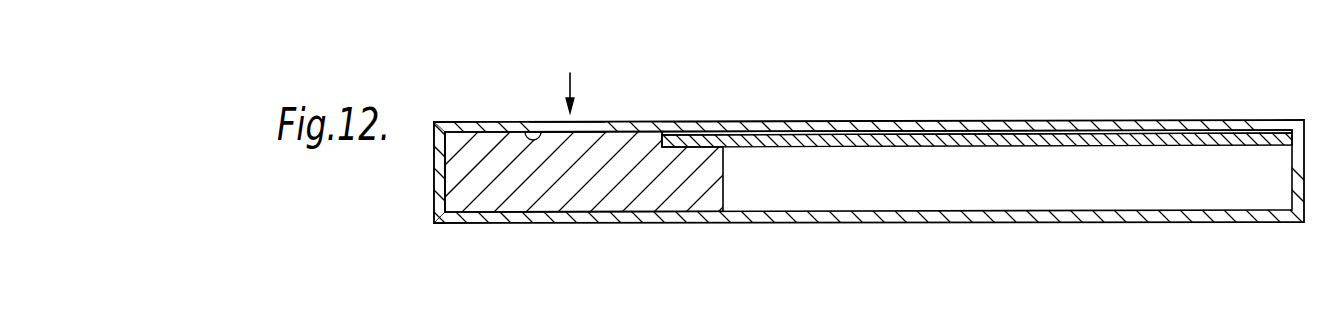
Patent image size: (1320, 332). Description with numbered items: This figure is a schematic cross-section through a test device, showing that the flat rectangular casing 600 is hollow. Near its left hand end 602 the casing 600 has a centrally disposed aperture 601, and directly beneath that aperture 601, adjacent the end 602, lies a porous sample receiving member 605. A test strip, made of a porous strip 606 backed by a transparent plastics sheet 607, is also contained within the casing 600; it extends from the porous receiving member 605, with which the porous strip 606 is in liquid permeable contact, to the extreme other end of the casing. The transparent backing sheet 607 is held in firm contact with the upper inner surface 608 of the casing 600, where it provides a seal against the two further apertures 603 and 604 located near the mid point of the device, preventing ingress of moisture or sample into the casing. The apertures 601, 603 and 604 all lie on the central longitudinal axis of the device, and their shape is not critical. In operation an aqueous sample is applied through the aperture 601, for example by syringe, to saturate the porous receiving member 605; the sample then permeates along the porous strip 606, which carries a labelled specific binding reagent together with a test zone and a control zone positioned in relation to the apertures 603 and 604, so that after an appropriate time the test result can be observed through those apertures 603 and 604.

The casing 600 is at (1127, 120).
The aperture 601 is at (592, 123).
The left hand end 602 is at (435, 167).
The aperture 603 is at (878, 125).
The aperture 604 is at (958, 130).
The porous receiving member 605 is at (577, 180).
The porous strip 606 is at (977, 142).
The transparent plastics sheet 607 is at (850, 128).
The upper inner surface 608 is at (542, 131).